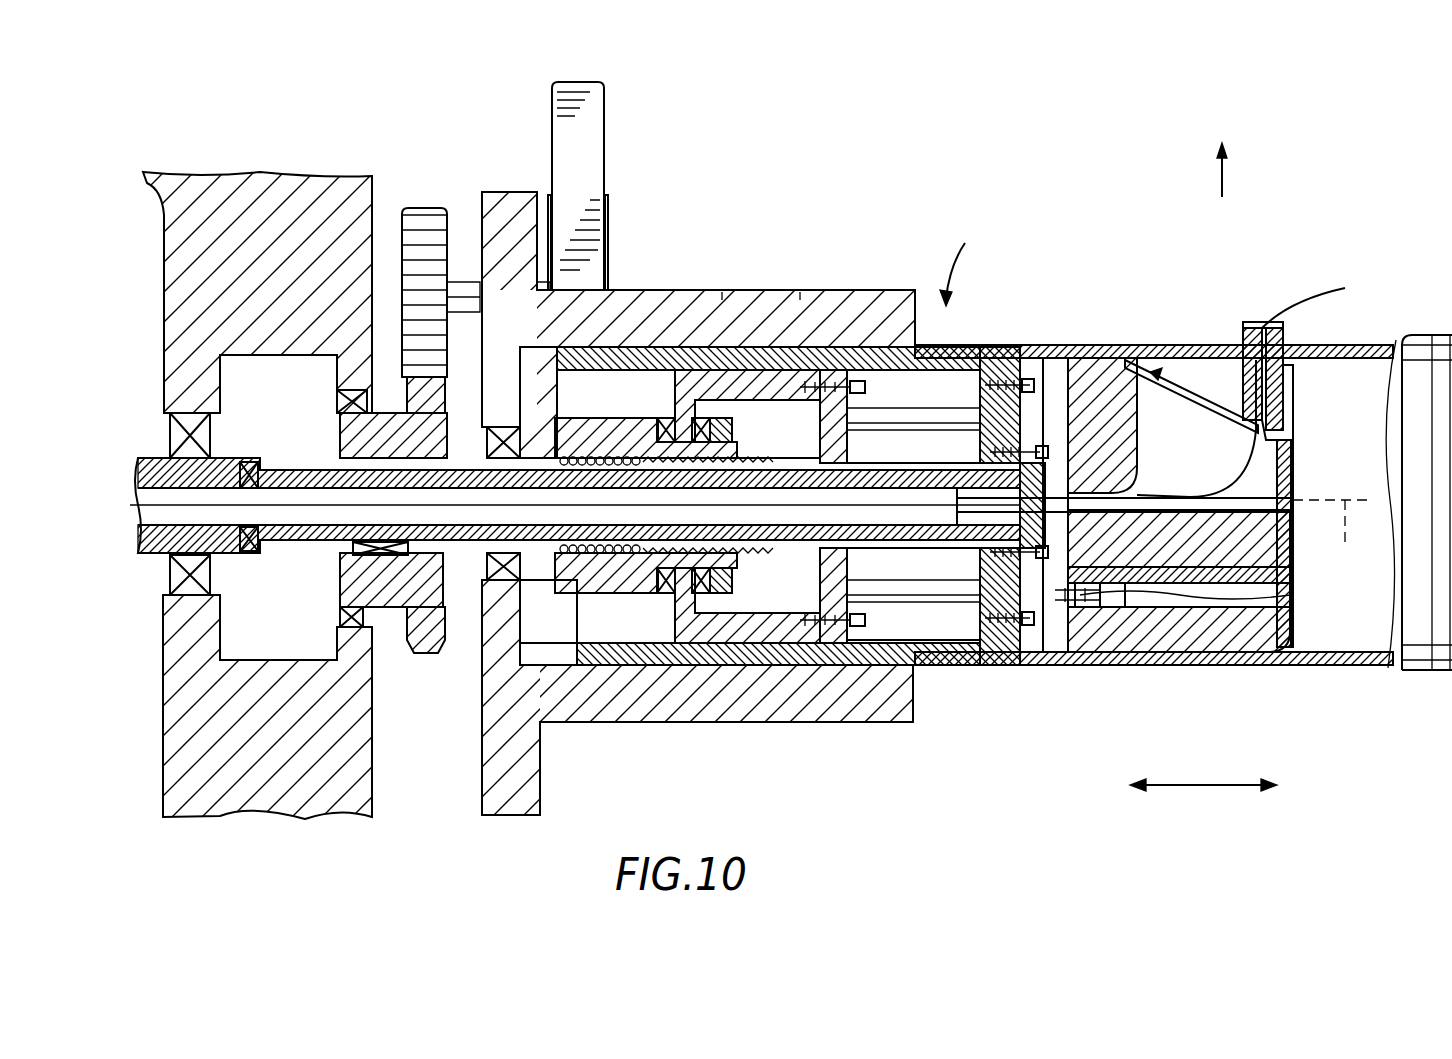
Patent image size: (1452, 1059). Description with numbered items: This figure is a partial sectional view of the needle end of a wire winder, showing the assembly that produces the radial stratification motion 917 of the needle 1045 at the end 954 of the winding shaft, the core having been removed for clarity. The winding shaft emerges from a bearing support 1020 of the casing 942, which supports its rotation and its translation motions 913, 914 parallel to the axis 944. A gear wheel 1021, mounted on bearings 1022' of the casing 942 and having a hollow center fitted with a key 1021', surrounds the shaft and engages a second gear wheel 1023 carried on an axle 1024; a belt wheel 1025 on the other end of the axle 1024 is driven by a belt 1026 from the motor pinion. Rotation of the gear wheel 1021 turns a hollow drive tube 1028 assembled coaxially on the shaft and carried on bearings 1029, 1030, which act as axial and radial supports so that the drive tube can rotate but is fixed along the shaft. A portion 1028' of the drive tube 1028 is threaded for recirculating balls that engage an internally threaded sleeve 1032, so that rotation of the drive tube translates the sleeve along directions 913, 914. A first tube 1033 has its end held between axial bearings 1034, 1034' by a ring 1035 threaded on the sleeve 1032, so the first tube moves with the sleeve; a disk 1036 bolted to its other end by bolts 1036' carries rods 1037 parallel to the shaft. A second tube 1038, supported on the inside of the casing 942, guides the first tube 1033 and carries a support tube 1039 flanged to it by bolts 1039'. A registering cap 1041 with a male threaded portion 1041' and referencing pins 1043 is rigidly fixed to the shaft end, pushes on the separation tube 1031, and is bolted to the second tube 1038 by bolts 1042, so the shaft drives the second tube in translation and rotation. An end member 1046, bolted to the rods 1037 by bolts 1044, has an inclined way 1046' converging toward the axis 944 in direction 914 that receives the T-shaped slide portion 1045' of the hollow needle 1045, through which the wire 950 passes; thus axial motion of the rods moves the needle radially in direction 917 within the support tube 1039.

The casing 942 is at (492, 190).
The bearing support 1020 is at (267, 707).
The second gear wheel 1023 is at (433, 207).
The gear wheel 1021 is at (431, 542).
The key 1021' is at (357, 530).
The belt 1026 is at (606, 155).
The belt wheel 1025 is at (611, 215).
The drive tube 1028 is at (575, 487).
The threaded portion of drive tube 1028' is at (664, 405).
The bearing 1029 is at (215, 592).
The bearing 1022' is at (404, 507).
The axle 1024 is at (750, 505).
The sleeve 1032 is at (672, 370).
The first tube 1033 is at (665, 596).
The ring 1035 is at (705, 596).
The bearing 1030 is at (795, 463).
The separation tube 1031 is at (870, 470).
The axial bearing 1034 is at (738, 297).
The axial bearing 1034' is at (831, 296).
The disk 1036 is at (830, 569).
The bolts 1036' is at (857, 677).
The rods 1037 is at (943, 412).
The second tube 1038 is at (977, 666).
The bolts 1039' is at (1038, 502).
The support tube 1039 is at (1059, 423).
The referencing pins 1043 is at (1048, 453).
The male threaded portion 1041' is at (1106, 631).
The bolts 1042 is at (1052, 346).
The registering cap 1041 is at (1179, 505).
The bolts 1044 is at (1290, 590).
The axis 944 is at (1334, 541).
The needle 1045 is at (1309, 369).
The wire 950 is at (1318, 290).
The slide portion 1045' is at (1333, 506).
The inclined way 1046' is at (1191, 364).
The end member 1046 is at (1183, 526).
The end of winding shaft 954 is at (976, 257).
The radial motion direction 917 is at (1222, 176).
The translation motion 913 is at (1133, 784).
The translation motion 914 is at (1278, 784).